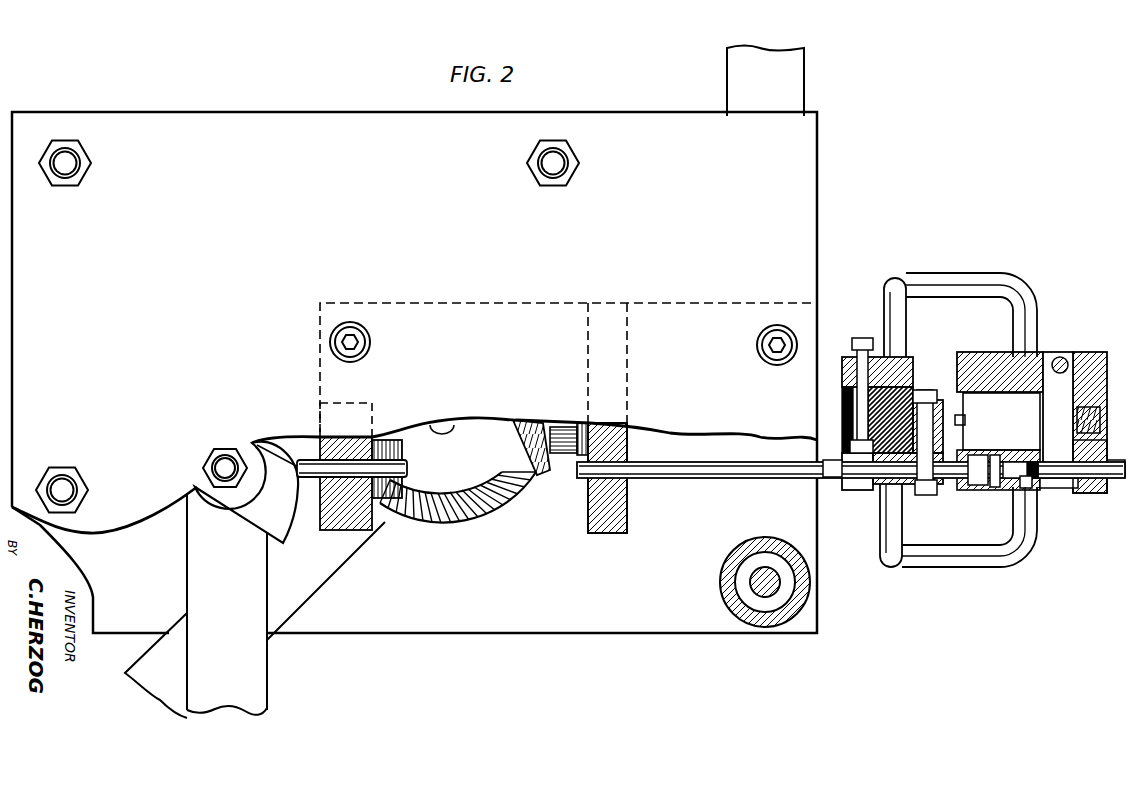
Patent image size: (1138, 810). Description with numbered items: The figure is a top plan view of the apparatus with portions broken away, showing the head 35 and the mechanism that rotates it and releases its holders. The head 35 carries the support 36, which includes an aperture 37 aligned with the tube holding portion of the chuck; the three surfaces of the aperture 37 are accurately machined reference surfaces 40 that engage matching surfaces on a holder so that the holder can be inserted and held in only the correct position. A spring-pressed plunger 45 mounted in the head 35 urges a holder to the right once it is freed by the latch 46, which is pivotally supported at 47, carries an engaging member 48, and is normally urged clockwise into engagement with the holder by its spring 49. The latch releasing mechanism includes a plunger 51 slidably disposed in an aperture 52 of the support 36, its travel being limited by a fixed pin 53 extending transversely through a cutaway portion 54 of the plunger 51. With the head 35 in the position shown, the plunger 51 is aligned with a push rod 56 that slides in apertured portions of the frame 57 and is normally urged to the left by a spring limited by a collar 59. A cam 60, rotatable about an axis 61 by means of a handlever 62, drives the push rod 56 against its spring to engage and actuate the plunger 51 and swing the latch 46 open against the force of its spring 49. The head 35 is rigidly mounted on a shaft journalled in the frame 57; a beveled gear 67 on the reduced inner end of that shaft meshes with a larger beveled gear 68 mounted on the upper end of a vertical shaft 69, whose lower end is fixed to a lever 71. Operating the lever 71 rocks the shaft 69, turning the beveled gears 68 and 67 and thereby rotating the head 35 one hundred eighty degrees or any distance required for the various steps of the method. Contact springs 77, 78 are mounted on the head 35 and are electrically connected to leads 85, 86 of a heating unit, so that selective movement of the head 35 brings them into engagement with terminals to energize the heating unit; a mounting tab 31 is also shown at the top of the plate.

The mounting tab 31 is at (737, 66).
The head 35 is at (857, 490).
The support 36 is at (1094, 342).
The aperture 37 is at (1000, 393).
The reference surfaces 40 is at (1000, 412).
The spring-pressed plunger 45 is at (965, 418).
The latch 46 is at (1060, 485).
The pivot 47 is at (1062, 357).
The engaging member 48 is at (1043, 421).
The spring 49 is at (1093, 493).
The plunger 51 is at (1018, 480).
The aperture 52 is at (1030, 485).
The pin 53 is at (995, 482).
The cutaway portion 54 is at (975, 480).
The push rod 56 is at (655, 478).
The frame 57 is at (610, 530).
The collar 59 is at (393, 440).
The cam 60 is at (287, 525).
The axis 61 is at (226, 462).
The handlever 62 is at (262, 693).
The beveled gear 67 is at (548, 458).
The beveled gear 68 is at (500, 490).
The vertical shaft 69 is at (440, 426).
The lever 71 is at (163, 690).
The contact spring 77 is at (820, 355).
The contact spring 78 is at (906, 490).
The lead 85 is at (930, 557).
The lead 86 is at (960, 280).